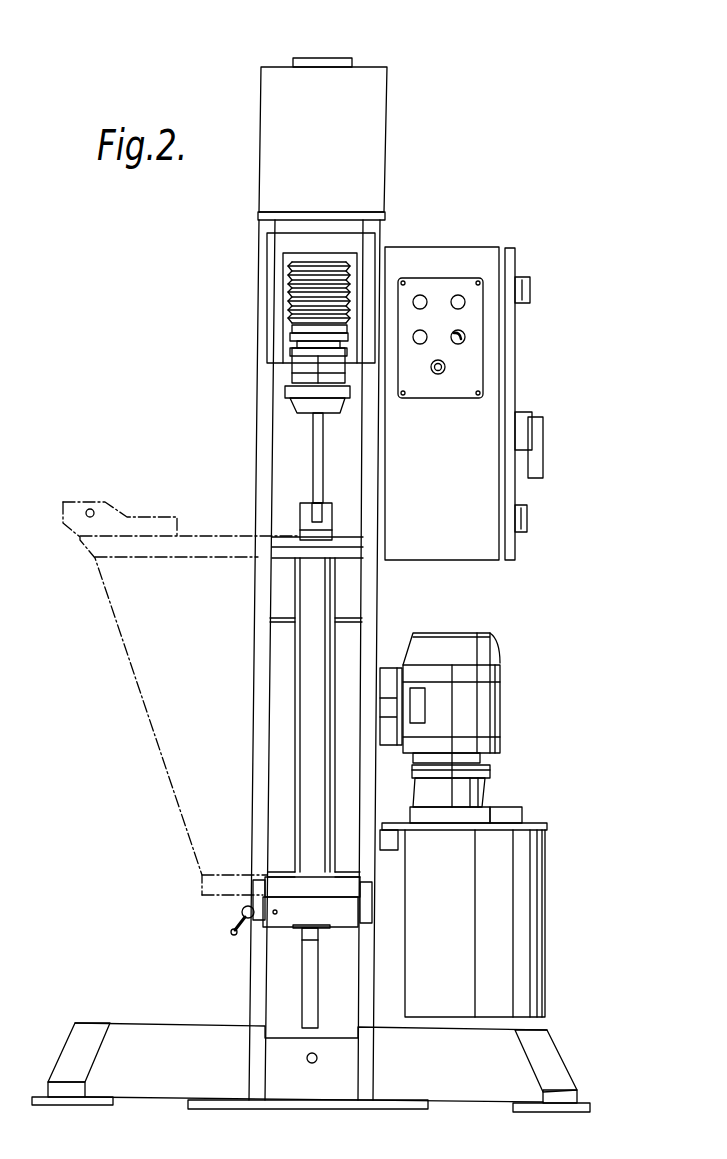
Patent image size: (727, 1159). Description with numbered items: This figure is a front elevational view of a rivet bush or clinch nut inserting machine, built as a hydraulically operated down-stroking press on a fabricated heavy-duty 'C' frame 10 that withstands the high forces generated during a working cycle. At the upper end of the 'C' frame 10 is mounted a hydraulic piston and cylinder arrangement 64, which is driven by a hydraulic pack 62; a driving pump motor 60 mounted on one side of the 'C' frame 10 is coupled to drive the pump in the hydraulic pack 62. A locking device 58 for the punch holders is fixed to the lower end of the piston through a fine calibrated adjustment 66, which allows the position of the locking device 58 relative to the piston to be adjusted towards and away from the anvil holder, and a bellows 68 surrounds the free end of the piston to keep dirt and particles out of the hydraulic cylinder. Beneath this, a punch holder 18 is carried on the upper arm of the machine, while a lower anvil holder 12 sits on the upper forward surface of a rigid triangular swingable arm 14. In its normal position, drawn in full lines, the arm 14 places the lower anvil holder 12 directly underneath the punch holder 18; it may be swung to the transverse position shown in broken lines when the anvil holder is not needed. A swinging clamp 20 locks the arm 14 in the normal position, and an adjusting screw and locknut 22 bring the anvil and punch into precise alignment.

The 'C' frame 10 is at (372, 587).
The lower anvil holder 12 is at (298, 518).
The swingable arm 14 is at (297, 748).
The punch holder 18 is at (312, 447).
The swinging clamp 20 is at (242, 908).
The adjusting screw and locknut 22 is at (373, 887).
The locking device 58 is at (288, 388).
The driving pump motor 60 is at (482, 698).
The hydraulic pack 62 is at (528, 928).
The hydraulic piston and cylinder arrangement 64 is at (338, 62).
The fine calibrated adjustment 66 is at (297, 342).
The bellows 68 is at (292, 295).